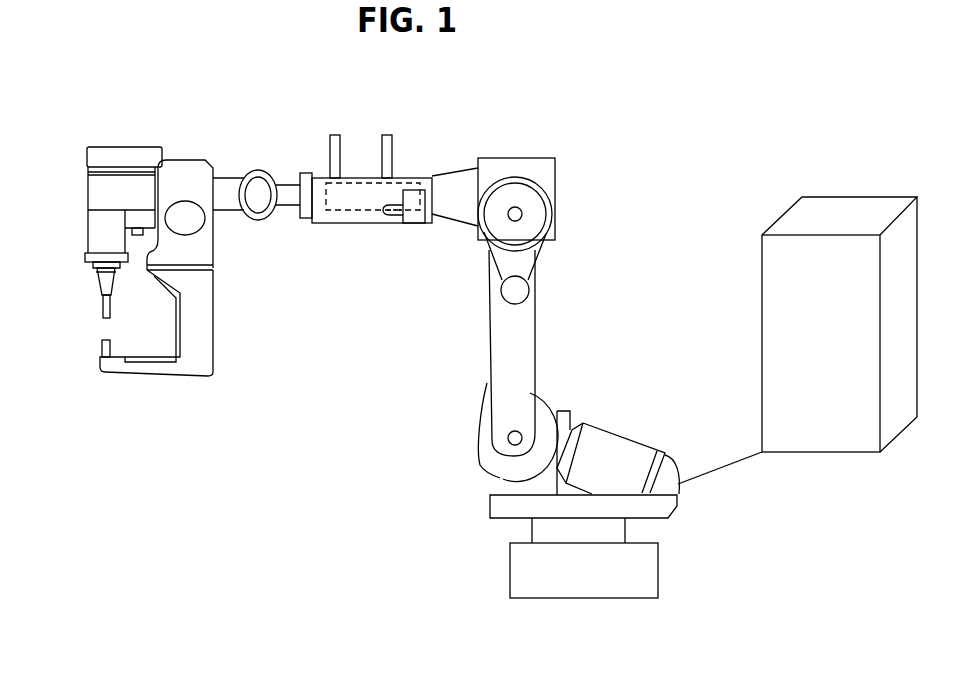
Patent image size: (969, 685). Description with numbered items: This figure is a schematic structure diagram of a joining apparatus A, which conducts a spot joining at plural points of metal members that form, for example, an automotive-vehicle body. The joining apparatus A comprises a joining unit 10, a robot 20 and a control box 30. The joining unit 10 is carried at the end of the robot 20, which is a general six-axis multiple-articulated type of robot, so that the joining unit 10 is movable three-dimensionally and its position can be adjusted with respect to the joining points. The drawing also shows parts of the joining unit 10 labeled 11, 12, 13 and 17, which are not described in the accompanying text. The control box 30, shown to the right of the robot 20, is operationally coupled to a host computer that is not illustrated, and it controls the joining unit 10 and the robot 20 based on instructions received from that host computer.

The joining unit 10 is at (214, 387).
The body of end effector 11 is at (184, 164).
The drive unit / tool head 12 is at (76, 136).
The tool tip / pin 13 is at (102, 303).
The anvil / support stub 17 is at (102, 348).
The robot 20 is at (576, 166).
The control box 30 is at (855, 186).
The joining apparatus A is at (330, 550).